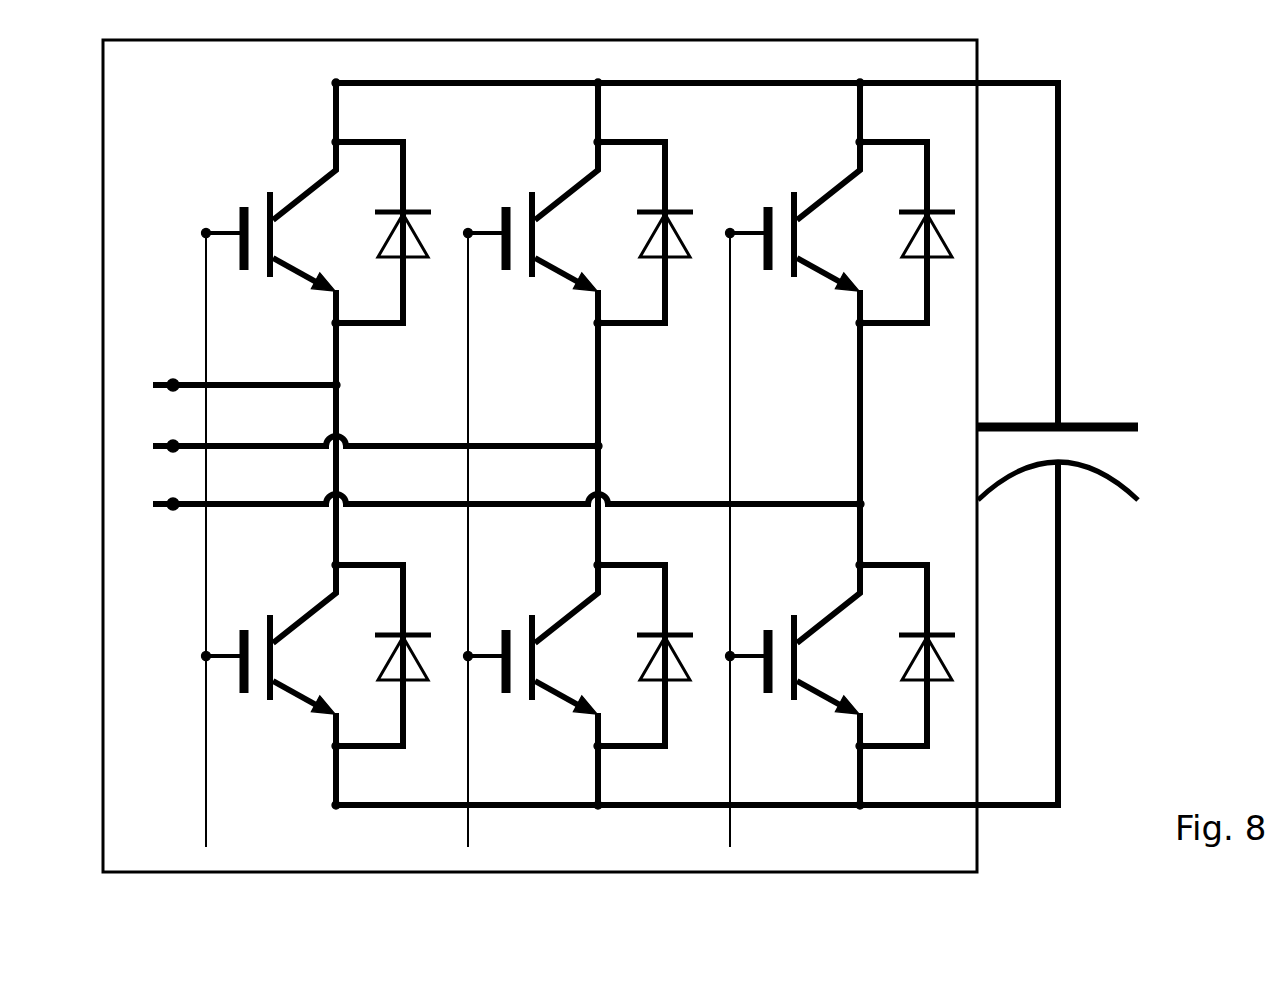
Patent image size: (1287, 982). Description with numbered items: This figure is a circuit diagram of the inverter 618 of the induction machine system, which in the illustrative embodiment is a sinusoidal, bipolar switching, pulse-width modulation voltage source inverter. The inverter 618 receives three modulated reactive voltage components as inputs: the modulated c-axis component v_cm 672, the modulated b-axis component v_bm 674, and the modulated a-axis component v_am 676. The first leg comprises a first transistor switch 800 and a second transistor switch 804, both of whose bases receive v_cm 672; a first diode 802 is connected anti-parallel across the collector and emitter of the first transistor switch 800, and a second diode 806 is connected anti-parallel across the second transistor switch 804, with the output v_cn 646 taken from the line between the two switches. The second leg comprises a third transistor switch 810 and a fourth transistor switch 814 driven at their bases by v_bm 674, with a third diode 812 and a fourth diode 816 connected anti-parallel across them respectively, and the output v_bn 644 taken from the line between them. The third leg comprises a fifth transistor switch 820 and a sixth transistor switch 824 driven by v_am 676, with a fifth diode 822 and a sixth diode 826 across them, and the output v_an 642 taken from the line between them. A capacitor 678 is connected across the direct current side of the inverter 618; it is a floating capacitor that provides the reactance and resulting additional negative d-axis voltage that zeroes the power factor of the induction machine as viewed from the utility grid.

The inverter 618 is at (160, 860).
The v_an output voltage 642 is at (186, 513).
The v_bn output voltage 644 is at (168, 442).
The v_cn output voltage 646 is at (173, 380).
The modulated c-axis component of the reactive voltage v_cm 672 is at (207, 755).
The modulated b-axis component of the reactive voltage v_bm 674 is at (470, 733).
The modulated a-axis component of the reactive voltage v_am 676 is at (733, 728).
The capacitor 678 is at (1102, 420).
The first transistor switch 800 is at (305, 190).
The first diode 802 is at (426, 208).
The second transistor switch 804 is at (269, 642).
The second diode 806 is at (372, 655).
The third transistor switch 810 is at (531, 226).
The third diode 812 is at (661, 232).
The fourth transistor switch 814 is at (531, 642).
The fourth diode 816 is at (635, 655).
The fifth transistor switch 820 is at (793, 226).
The fifth diode 822 is at (905, 232).
The sixth transistor switch 824 is at (793, 642).
The sixth diode 826 is at (897, 655).